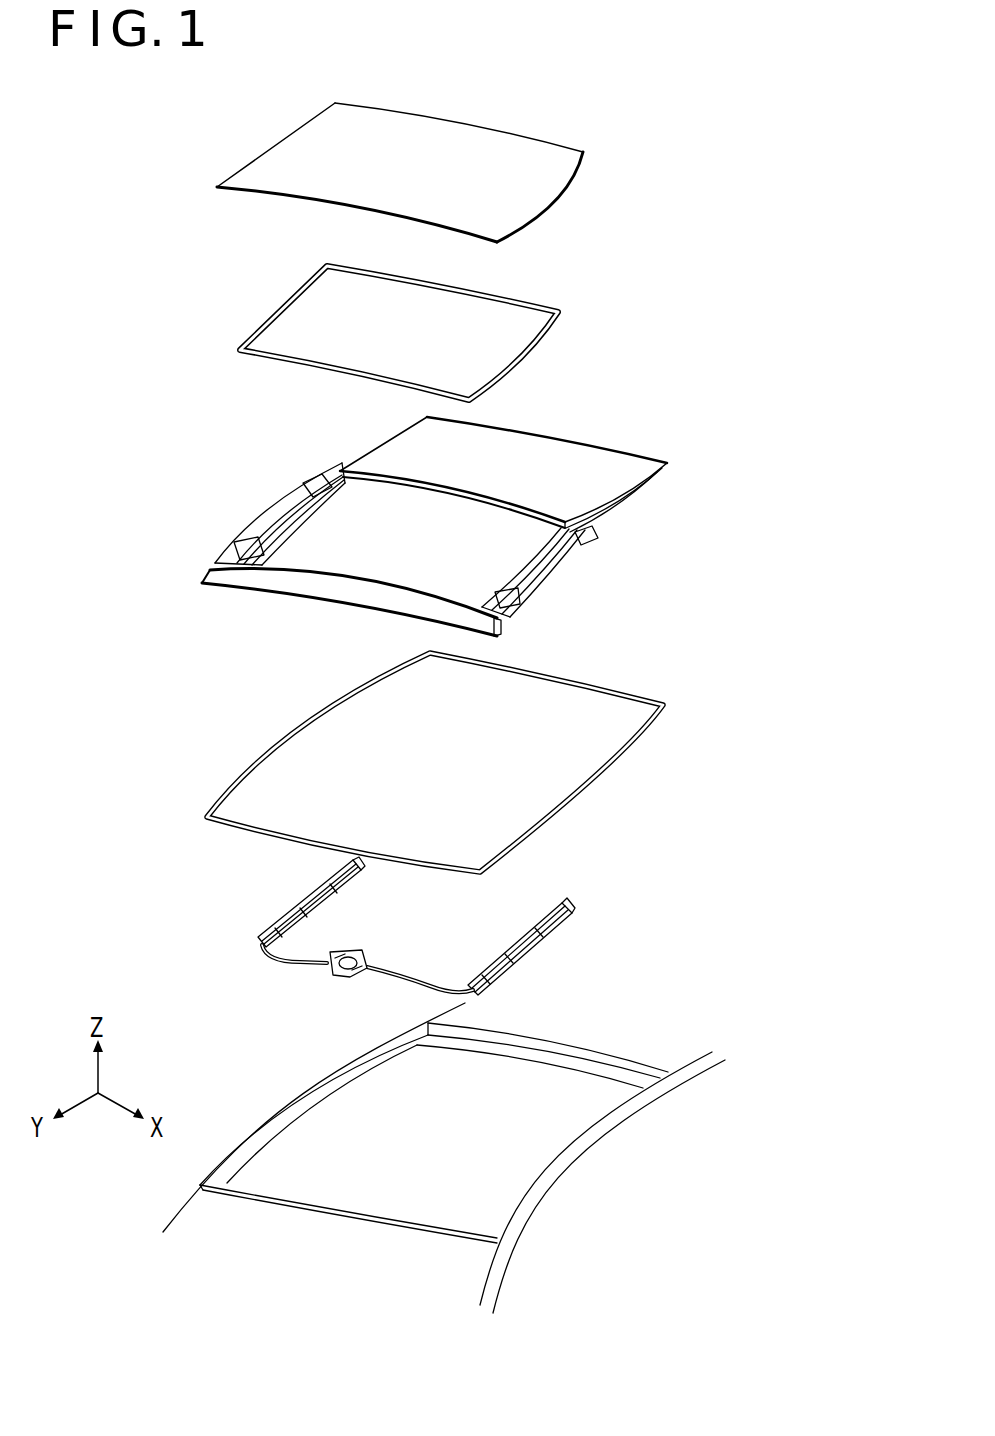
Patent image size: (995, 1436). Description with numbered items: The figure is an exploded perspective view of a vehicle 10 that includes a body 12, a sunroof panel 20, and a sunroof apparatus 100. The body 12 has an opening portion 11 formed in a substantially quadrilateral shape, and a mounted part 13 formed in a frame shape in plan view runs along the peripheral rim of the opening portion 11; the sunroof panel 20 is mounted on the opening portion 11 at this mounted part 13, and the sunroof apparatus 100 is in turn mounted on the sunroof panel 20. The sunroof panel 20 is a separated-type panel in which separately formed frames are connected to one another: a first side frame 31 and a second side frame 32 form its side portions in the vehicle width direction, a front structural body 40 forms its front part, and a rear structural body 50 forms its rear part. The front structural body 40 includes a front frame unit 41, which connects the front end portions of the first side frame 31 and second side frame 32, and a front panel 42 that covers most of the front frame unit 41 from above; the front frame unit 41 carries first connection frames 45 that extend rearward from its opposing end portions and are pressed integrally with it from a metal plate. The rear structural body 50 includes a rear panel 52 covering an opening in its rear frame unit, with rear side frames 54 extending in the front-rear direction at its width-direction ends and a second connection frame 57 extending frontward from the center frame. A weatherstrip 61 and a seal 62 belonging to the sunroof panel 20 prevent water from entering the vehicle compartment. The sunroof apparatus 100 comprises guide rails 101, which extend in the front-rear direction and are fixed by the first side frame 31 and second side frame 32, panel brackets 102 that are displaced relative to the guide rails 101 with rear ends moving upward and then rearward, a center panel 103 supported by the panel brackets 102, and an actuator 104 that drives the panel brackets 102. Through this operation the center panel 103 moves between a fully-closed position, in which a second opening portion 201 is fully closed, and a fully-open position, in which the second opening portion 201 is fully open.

The vehicle 10 is at (113, 124).
The opening portion 11 is at (444, 1158).
The body 12 is at (500, 1273).
The mounted part 13 is at (527, 1052).
The sunroof panel 20 is at (727, 464).
The first side frame 31 is at (270, 517).
The second side frame 32 is at (527, 584).
The front structural body 40 is at (354, 604).
The front frame unit 41 is at (500, 637).
The front panel 42 is at (332, 595).
The first connection frames 45 is at (223, 557).
The rear structural body 50 is at (375, 437).
The rear panel 52 is at (593, 453).
The rear side frames 54 is at (638, 492).
The second connection frame 57 is at (317, 485).
The weatherstrip 61 is at (530, 347).
The seal 62 is at (570, 768).
The sunroof apparatus 100 is at (541, 967).
The guide rails 101 is at (557, 930).
The panel brackets 102 is at (570, 898).
The center panel 103 is at (517, 142).
The actuator 104 is at (340, 975).
The second opening portion 201 is at (473, 528).